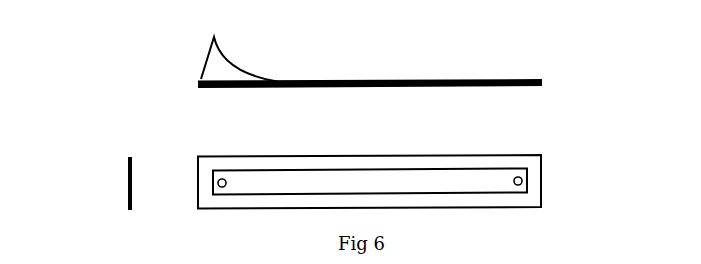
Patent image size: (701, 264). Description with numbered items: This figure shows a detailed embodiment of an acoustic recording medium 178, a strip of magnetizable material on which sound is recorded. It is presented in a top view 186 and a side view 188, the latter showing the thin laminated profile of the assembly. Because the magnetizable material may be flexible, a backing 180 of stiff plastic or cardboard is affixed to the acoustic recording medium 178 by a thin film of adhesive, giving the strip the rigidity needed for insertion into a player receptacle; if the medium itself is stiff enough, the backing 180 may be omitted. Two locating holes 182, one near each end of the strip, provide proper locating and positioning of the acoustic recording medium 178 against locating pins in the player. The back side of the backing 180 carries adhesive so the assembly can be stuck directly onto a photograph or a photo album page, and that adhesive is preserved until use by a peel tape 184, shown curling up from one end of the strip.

The acoustic recording medium 178 is at (497, 170).
The backing 180 is at (542, 182).
The locating hole 182 is at (521, 187).
The peel tape 184 is at (226, 62).
The top view of acoustic recording medium 186 is at (497, 80).
The side view of acoustic recording medium 188 is at (128, 191).